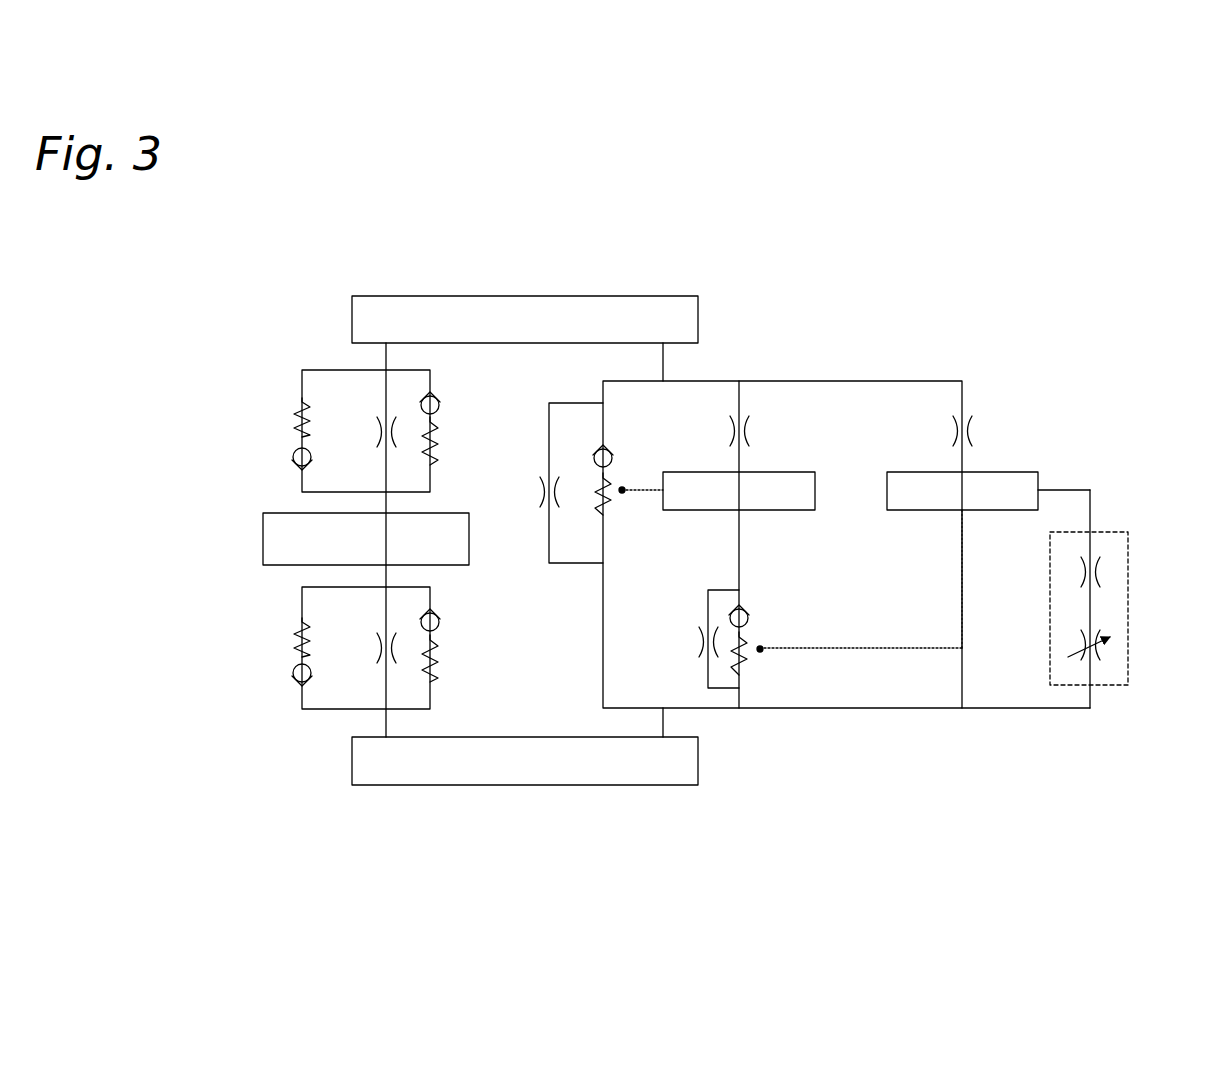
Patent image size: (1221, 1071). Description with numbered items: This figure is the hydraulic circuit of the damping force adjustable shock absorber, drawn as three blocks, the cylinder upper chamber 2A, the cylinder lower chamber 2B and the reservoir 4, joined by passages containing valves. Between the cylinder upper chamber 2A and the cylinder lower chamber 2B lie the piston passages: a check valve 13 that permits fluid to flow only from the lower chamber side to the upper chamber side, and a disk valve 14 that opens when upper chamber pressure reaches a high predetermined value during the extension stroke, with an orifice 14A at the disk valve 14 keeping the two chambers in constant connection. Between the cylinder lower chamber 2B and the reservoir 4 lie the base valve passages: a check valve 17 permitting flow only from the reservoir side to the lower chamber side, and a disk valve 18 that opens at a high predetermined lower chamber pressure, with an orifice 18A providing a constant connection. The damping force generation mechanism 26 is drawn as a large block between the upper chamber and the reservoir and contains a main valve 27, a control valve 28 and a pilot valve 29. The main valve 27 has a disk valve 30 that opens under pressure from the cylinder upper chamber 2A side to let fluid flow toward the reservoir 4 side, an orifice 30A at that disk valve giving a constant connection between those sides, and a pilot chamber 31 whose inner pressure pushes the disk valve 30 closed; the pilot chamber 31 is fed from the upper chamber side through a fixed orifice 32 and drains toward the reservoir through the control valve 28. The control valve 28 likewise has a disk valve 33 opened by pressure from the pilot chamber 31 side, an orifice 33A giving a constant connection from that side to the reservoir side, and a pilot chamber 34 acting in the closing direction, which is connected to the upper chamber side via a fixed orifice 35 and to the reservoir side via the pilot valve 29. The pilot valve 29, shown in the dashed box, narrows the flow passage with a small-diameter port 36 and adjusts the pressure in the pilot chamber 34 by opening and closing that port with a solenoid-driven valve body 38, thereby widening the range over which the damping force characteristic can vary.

The cylinder upper chamber 2A is at (625, 295).
The cylinder lower chamber 2B is at (262, 528).
The reservoir 4 is at (603, 786).
The check valve 13 is at (292, 466).
The disk valve 14 is at (439, 400).
The orifice 14A is at (378, 437).
The check valve 17 is at (296, 680).
The disk valve 18 is at (439, 620).
The orifice 18A is at (378, 647).
The damping force generation mechanism 26 is at (912, 356).
The main valve 27 is at (624, 528).
The control valve 28 is at (776, 643).
The pilot valve 29 is at (1135, 522).
The disk valve 30 is at (608, 454).
The orifice 30A is at (541, 493).
The pilot chamber 31 is at (817, 484).
The fixed orifice 32 is at (752, 438).
The disk valve 33 is at (748, 613).
The orifice 33A is at (700, 645).
The pilot chamber 34 is at (1040, 480).
The fixed orifice 35 is at (975, 432).
The port 36 is at (1103, 576).
The valve body 38 is at (1102, 651).